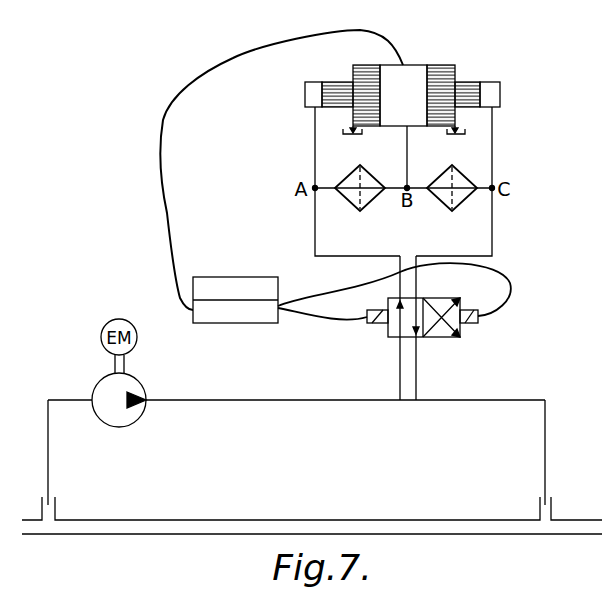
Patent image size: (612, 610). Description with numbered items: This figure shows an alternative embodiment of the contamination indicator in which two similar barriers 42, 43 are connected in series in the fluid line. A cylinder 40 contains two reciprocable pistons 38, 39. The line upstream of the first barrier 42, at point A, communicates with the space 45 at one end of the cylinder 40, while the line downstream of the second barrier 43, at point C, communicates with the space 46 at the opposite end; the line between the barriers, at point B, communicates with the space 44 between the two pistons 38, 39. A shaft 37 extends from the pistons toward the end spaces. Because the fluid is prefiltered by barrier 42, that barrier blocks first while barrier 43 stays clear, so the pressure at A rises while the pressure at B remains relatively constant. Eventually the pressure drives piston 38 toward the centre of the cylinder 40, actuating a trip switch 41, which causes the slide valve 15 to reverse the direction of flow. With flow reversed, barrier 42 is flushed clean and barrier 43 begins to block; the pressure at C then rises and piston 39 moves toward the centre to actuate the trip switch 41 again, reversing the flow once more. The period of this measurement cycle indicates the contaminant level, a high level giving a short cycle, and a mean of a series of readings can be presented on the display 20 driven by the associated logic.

The slide valve 15 is at (464, 336).
The display 20 is at (253, 271).
The armature shaft 37 is at (469, 81).
The piston 38 is at (357, 74).
The piston 39 is at (448, 72).
The cylinder 40 is at (399, 128).
The trip switch 41 is at (410, 63).
The barrier 42 is at (369, 207).
The barrier 43 is at (459, 207).
The space between the two pistons 44 is at (410, 106).
The space 45 is at (303, 100).
The space 46 is at (503, 98).